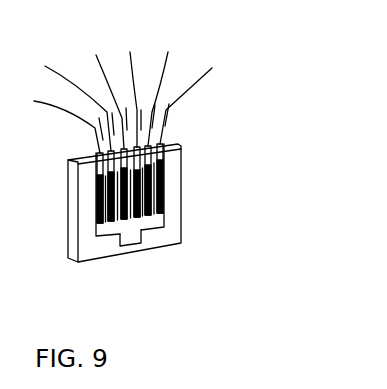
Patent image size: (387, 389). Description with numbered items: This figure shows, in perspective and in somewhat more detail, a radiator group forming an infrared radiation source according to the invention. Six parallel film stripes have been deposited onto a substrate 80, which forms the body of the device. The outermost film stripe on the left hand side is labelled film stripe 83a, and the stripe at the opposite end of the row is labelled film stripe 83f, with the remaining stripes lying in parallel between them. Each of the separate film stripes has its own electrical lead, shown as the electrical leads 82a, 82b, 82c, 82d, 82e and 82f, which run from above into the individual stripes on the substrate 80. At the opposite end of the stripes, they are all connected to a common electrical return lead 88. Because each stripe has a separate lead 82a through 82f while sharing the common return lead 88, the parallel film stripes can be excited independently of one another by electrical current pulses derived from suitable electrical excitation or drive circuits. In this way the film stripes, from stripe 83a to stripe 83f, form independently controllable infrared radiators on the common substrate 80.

The substrate 80 is at (73, 257).
The electrical lead 82a is at (52, 120).
The electrical lead 82b is at (64, 102).
The electrical lead 82c is at (96, 91).
The electrical lead 82d is at (130, 90).
The electrical lead 82e is at (176, 89).
The electrical lead 82f is at (204, 101).
The film stripe 83a is at (97, 203).
The film stripe 83f is at (163, 195).
The common electrical return lead 88 is at (134, 246).